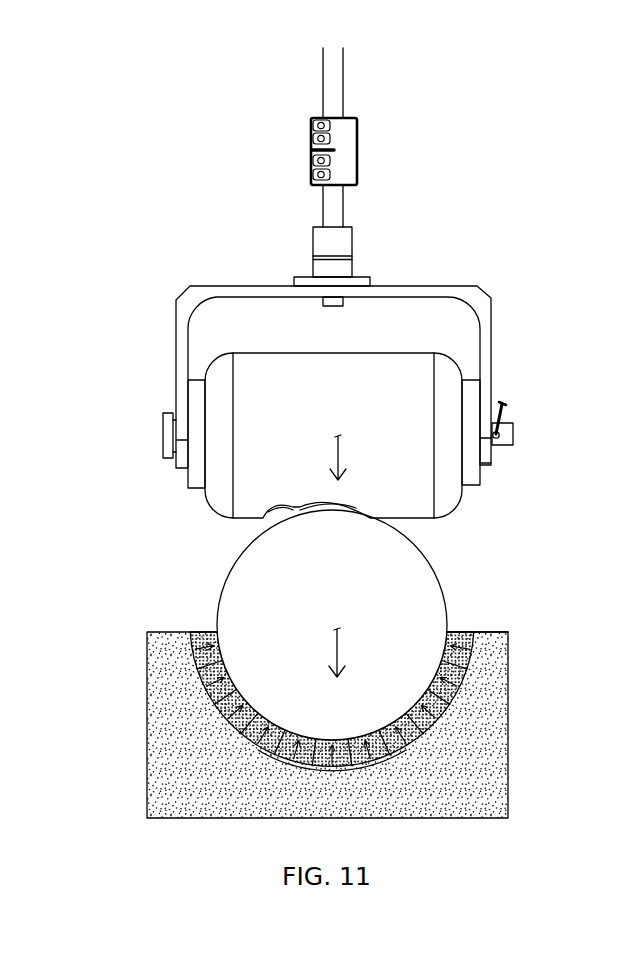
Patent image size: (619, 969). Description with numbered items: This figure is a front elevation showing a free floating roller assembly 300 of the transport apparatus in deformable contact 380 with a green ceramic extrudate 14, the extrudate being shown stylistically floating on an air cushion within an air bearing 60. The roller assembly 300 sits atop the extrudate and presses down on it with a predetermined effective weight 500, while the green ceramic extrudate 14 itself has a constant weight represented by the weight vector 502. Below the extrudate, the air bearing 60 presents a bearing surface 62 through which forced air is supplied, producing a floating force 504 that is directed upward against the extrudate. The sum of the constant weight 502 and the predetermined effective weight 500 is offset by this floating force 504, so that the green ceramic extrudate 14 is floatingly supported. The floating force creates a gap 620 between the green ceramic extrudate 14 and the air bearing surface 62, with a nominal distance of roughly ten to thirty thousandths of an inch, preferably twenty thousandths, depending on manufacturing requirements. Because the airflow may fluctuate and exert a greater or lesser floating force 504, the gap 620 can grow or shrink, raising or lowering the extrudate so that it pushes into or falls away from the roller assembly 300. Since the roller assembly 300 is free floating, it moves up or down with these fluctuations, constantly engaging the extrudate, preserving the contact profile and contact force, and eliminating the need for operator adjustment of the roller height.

The roller assembly 300 is at (514, 250).
The predetermined effective weight 500 is at (338, 457).
The deformable contact 380 is at (233, 518).
The green ceramic extrudate 14 is at (400, 582).
The gap 620 is at (458, 630).
The bearing surface 62 is at (461, 688).
The air bearing 60 is at (488, 747).
The weight vector 502 is at (336, 652).
The floating force 504 is at (330, 764).